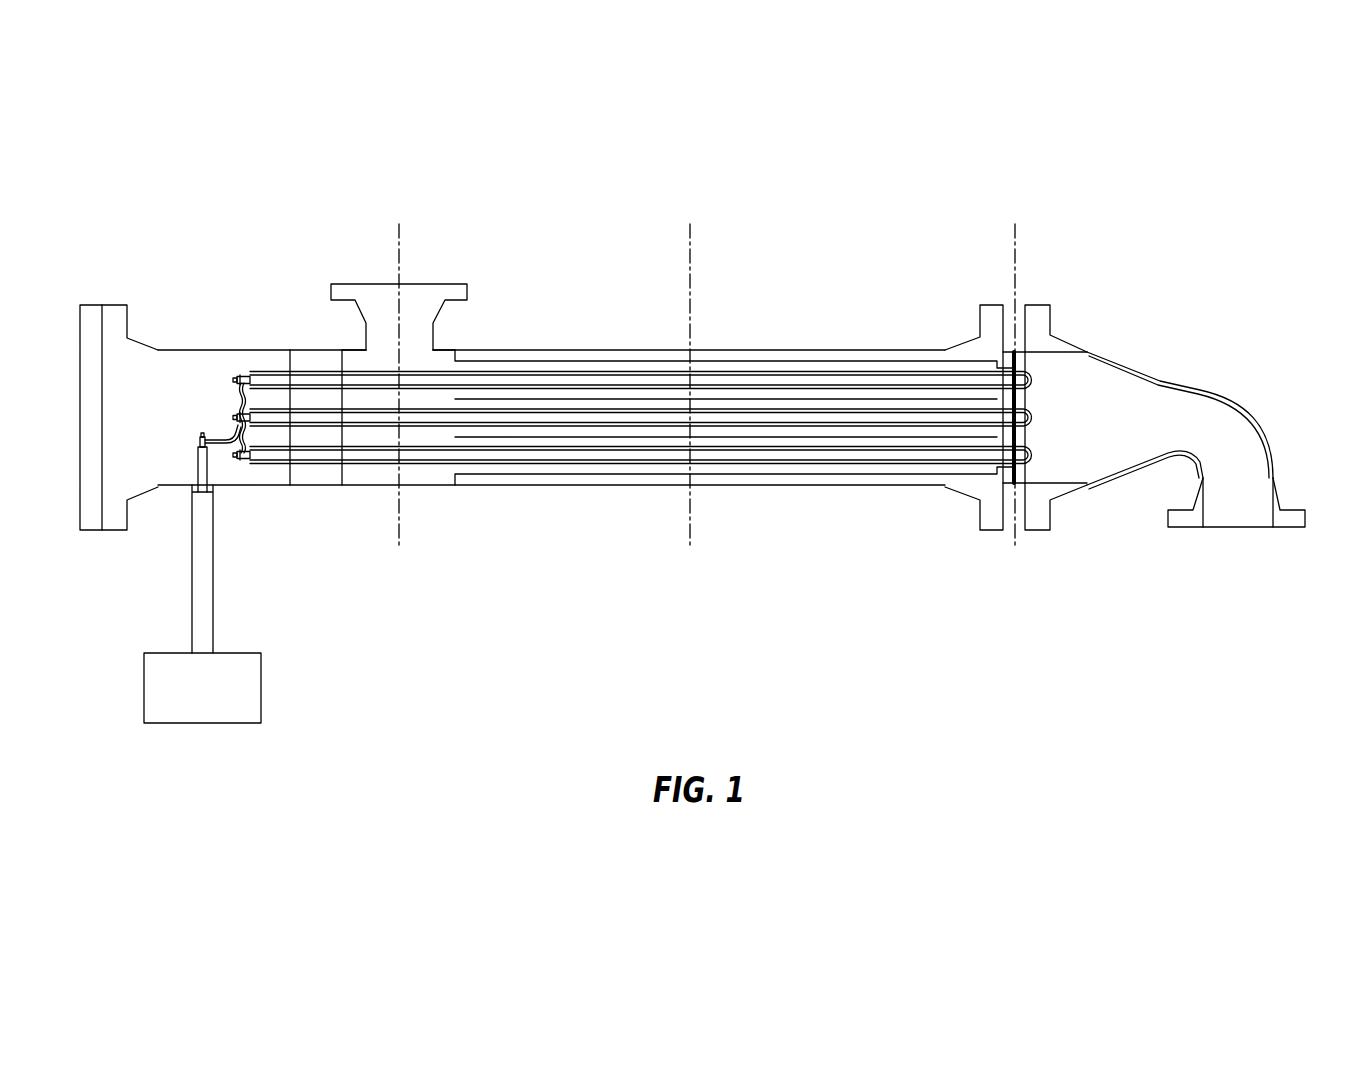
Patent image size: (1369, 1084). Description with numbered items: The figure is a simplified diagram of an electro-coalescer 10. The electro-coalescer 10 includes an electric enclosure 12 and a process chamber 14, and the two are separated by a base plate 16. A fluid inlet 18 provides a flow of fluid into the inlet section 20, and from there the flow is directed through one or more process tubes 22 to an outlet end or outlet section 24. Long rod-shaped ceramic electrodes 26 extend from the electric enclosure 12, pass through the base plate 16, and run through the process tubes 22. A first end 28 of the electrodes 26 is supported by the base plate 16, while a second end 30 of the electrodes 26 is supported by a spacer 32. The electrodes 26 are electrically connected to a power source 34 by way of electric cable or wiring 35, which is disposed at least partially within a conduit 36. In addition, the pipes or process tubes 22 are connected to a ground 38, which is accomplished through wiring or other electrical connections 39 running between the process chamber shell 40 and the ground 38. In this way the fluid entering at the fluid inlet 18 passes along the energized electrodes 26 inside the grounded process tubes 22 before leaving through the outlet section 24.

The electro-coalescer 10 is at (581, 236).
The electric enclosure 12 is at (112, 304).
The process chamber 14 is at (651, 329).
The base plate 16 is at (315, 478).
The fluid inlet 18 is at (350, 283).
The inlet section 20 is at (378, 402).
The process tubes 22 is at (568, 398).
The outlet section 24 is at (1068, 420).
The ceramic electrodes 26 is at (415, 370).
The first end 28 is at (270, 370).
The second end 30 is at (940, 371).
The spacer 32 is at (1005, 437).
The power source 34 is at (261, 685).
The wiring 35 is at (226, 436).
The conduit 36 is at (213, 573).
The ground 38 is at (1287, 527).
The electrical connections 39 is at (1233, 398).
The process chamber shell 40 is at (768, 348).